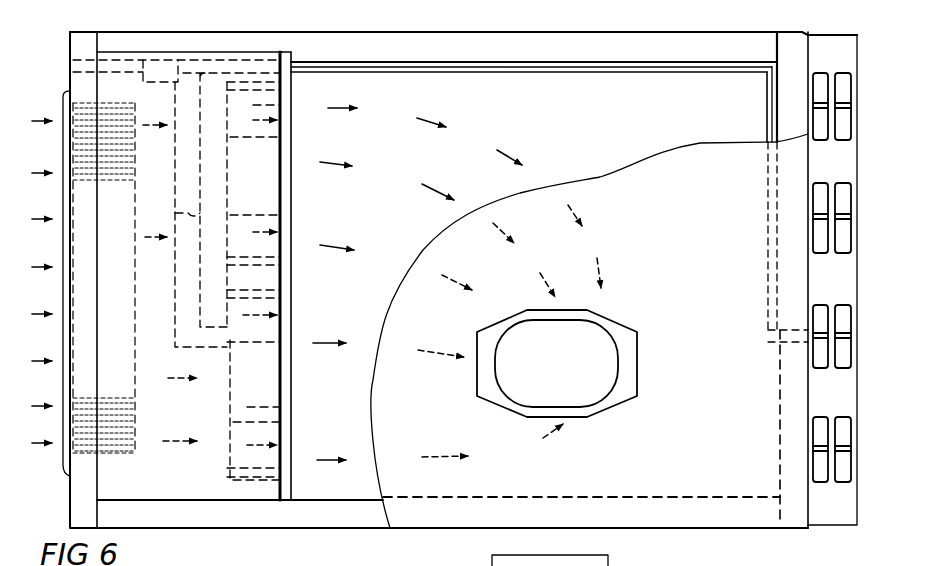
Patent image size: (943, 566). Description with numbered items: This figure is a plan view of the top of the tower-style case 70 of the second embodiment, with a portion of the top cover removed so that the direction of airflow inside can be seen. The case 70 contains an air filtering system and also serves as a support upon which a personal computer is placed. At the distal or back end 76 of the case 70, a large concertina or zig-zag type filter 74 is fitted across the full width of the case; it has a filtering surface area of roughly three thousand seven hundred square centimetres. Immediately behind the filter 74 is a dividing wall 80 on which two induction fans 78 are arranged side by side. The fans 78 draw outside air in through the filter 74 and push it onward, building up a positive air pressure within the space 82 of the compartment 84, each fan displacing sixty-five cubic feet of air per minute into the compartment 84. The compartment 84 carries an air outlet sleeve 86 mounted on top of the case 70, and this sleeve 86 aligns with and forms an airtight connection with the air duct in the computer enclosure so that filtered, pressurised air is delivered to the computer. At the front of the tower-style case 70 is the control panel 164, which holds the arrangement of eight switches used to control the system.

The tower-style case 70 is at (290, 528).
The filter 74 is at (80, 127).
The distal or back end 76 is at (70, 43).
The induction fans 78 is at (282, 107).
The dividing wall 80 is at (292, 214).
The space 82 is at (584, 133).
The compartment 84 is at (708, 124).
The air outlet sleeve 86 is at (637, 366).
The control panel 164 is at (845, 515).